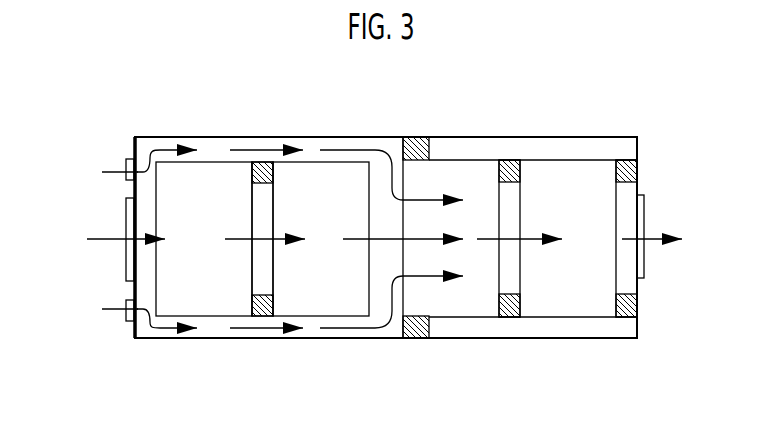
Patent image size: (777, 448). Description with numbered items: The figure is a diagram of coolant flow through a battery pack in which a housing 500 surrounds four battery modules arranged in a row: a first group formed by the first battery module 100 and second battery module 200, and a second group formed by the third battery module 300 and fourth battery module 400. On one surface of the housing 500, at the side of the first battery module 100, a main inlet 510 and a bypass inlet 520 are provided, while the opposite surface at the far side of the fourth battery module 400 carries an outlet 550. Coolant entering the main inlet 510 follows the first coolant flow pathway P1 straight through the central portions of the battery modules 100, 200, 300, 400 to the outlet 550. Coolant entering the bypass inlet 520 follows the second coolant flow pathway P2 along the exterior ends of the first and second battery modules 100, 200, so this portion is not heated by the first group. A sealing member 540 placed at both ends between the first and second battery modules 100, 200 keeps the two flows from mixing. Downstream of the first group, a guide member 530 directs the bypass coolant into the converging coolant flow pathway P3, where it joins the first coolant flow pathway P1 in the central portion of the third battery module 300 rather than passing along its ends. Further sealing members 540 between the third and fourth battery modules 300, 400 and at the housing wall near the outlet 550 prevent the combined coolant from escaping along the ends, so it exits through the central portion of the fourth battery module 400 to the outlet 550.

The first battery module 100 is at (213, 298).
The second battery module 200 is at (338, 298).
The third battery module 300 is at (462, 298).
The fourth battery module 400 is at (572, 298).
The housing 500 is at (637, 339).
The main inlet 510 is at (133, 220).
The bypass inlet 520 is at (126, 309).
The guide member 530 is at (412, 137).
The sealing member 540 is at (262, 165).
The outlet 550 is at (644, 265).
The first coolant flow pathway P1 is at (357, 238).
The second coolant flow pathway P2 is at (252, 339).
The converging coolant flow pathway P3 is at (400, 300).